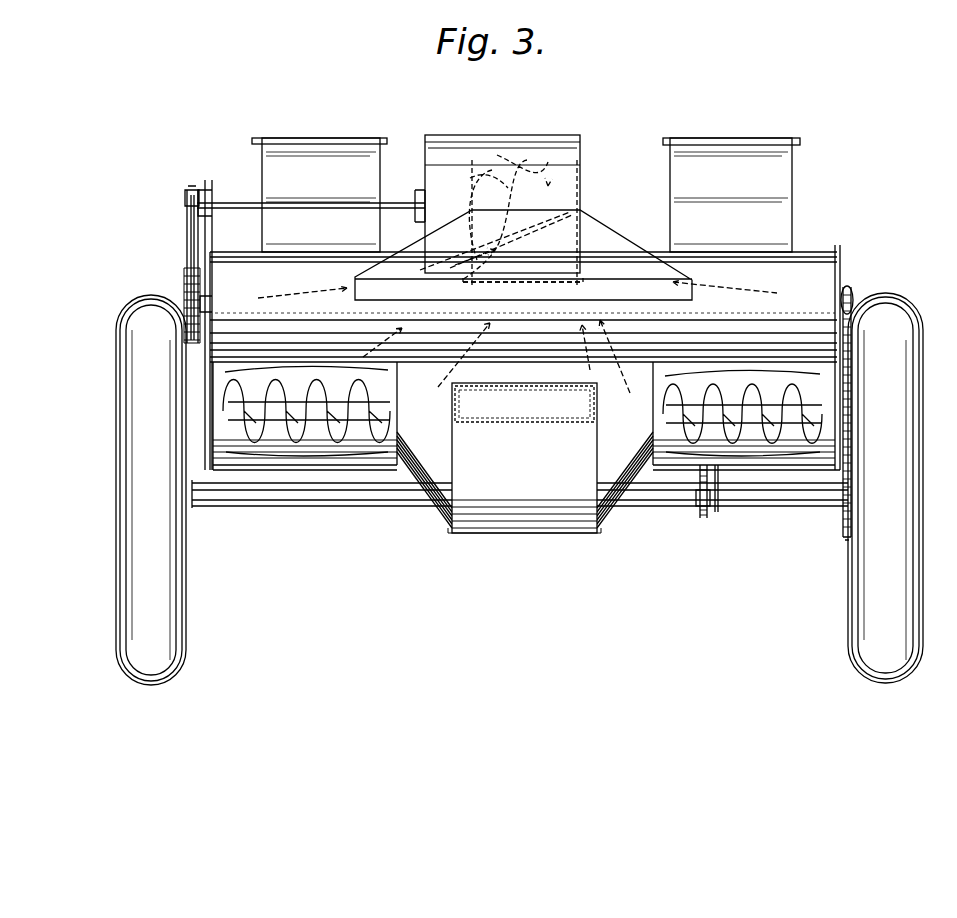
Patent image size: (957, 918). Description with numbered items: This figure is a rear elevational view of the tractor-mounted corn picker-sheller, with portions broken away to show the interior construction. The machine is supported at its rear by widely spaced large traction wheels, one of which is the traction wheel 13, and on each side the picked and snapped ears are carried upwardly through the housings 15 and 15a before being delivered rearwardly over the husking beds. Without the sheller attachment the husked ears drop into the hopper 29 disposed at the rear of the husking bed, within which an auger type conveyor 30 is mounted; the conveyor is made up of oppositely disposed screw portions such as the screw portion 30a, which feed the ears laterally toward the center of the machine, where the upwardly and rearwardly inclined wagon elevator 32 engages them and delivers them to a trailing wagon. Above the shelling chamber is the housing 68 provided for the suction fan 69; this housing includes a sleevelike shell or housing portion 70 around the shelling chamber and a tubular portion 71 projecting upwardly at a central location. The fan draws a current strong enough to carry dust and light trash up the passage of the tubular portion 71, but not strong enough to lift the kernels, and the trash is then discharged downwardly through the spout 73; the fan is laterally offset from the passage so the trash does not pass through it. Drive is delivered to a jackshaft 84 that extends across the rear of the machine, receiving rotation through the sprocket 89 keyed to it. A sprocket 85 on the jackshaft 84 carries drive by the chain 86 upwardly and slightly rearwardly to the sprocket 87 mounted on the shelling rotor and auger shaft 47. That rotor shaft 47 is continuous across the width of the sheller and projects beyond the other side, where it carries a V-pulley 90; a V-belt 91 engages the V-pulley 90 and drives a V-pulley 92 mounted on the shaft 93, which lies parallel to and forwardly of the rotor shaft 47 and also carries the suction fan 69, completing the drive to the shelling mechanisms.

The traction wheel 13 is at (945, 608).
The housing 15 is at (728, 152).
The housing 15a is at (293, 138).
The hopper 29 is at (790, 445).
The auger type conveyor 30 is at (736, 452).
The screw portion 30a is at (290, 450).
The wagon elevator 32 is at (497, 525).
The shelling rotor and auger shaft 47 is at (212, 303).
The housing 68 is at (559, 131).
The suction fan 69 is at (478, 168).
The shell or housing portion 70 is at (543, 345).
The tubular portion 71 is at (592, 232).
The spout 73 is at (575, 263).
The jackshaft 84 is at (783, 500).
The sprocket 85 is at (847, 537).
The chain 86 is at (853, 390).
The sprocket 87 is at (851, 291).
The sprocket 89 is at (703, 518).
The V-pulley 90 is at (186, 278).
The V-belt 91 is at (187, 233).
The V-pulley 92 is at (187, 196).
The shaft 93 is at (228, 203).